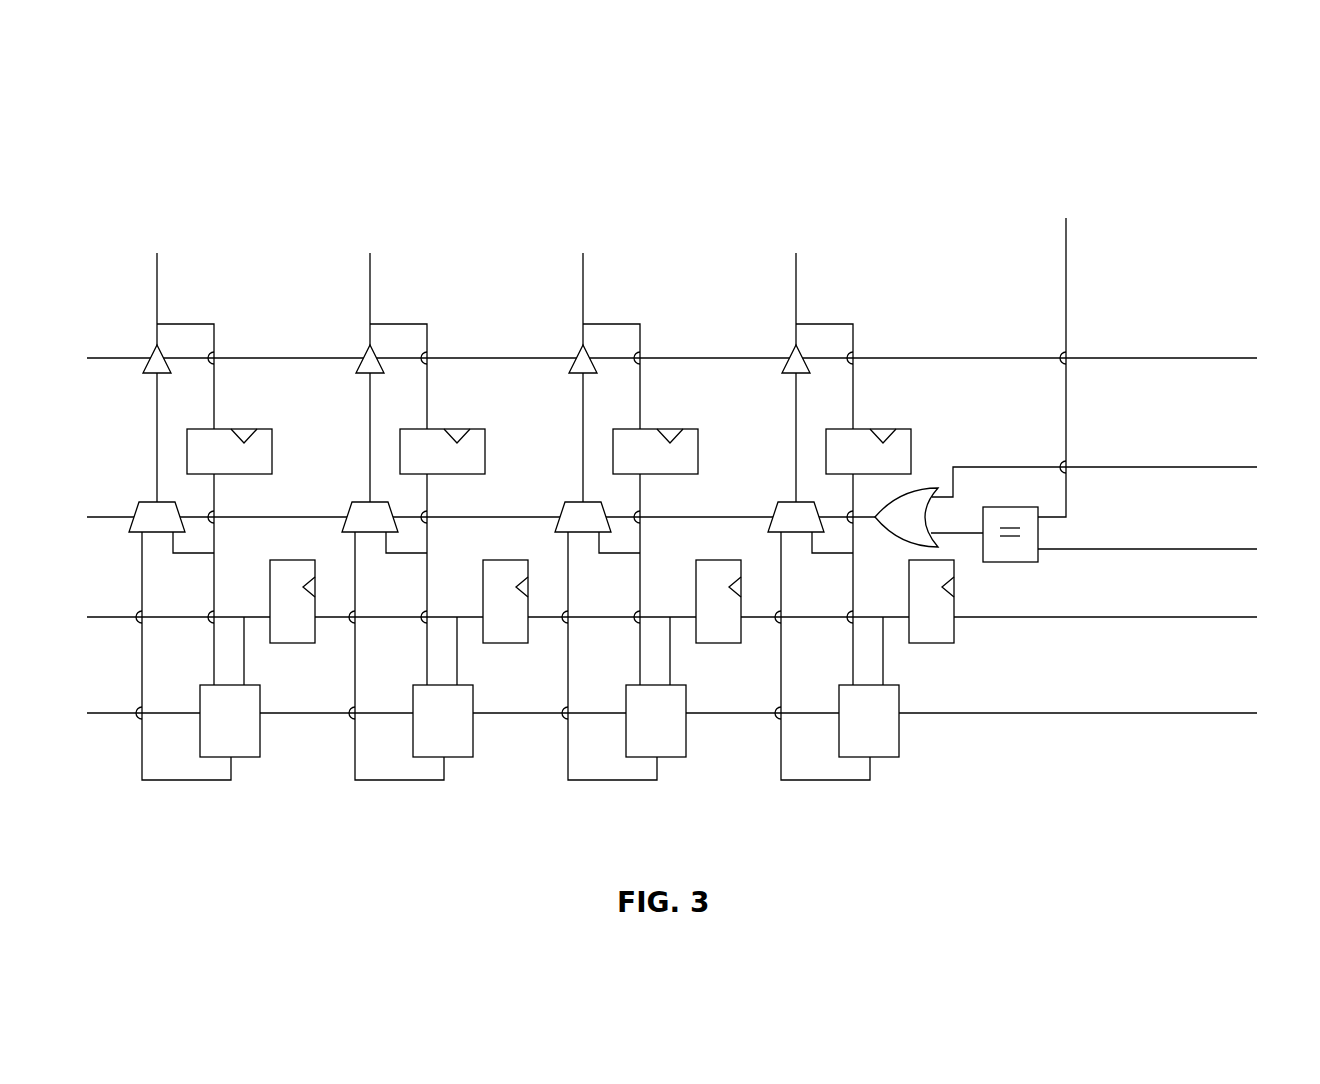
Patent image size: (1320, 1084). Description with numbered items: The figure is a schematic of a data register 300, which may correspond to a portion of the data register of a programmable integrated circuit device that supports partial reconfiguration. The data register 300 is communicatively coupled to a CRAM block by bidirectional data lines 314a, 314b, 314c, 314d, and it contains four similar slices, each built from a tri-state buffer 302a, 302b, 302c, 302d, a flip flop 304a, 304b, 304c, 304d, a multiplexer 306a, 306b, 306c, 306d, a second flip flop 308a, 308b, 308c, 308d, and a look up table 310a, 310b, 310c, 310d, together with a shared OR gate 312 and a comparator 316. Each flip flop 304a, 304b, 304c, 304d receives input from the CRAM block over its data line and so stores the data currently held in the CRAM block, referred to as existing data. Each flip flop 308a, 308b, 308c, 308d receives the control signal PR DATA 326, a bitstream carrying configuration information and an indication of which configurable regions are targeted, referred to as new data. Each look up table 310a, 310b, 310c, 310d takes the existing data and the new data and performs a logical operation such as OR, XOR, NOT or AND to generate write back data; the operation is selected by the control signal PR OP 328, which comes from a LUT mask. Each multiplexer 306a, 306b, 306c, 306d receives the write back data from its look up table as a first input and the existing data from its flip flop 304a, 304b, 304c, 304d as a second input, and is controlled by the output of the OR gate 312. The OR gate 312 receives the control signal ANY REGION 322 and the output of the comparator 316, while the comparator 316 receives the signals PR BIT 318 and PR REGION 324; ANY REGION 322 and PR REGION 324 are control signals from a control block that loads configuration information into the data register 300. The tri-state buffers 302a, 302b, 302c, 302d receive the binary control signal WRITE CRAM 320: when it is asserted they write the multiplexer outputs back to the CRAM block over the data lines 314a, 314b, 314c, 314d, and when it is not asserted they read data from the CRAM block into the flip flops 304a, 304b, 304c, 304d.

The data register 300 is at (138, 140).
The tri-state buffer 302a is at (153, 353).
The tri-state buffer 302b is at (366, 353).
The tri-state buffer 302c is at (579, 353).
The tri-state buffer 302d is at (792, 353).
The flip flop 304a is at (266, 429).
The flip flop 304b is at (479, 429).
The flip flop 304c is at (692, 429).
The flip flop 304d is at (905, 429).
The multiplexer 306a is at (140, 498).
The multiplexer 306b is at (353, 498).
The multiplexer 306c is at (566, 498).
The multiplexer 306d is at (779, 498).
The flip flop 308a is at (293, 643).
The flip flop 308b is at (506, 643).
The flip flop 308c is at (719, 643).
The flip flop 308d is at (932, 643).
The look up table 310a is at (243, 758).
The look up table 310b is at (456, 758).
The look up table 310c is at (669, 758).
The look up table 310d is at (882, 758).
The OR gate 312 is at (923, 485).
The data line 314a is at (177, 250).
The data line 314b is at (390, 250).
The data line 314c is at (603, 250).
The data line 314d is at (816, 250).
The comparator 316 is at (1010, 562).
The PR BIT 318 is at (1066, 240).
The WRITE CRAM 320 is at (1245, 360).
The ANY REGION 322 is at (1245, 469).
The PR REGION 324 is at (1245, 551).
The PR DATA 326 is at (1245, 619).
The PR OP 328 is at (1245, 715).